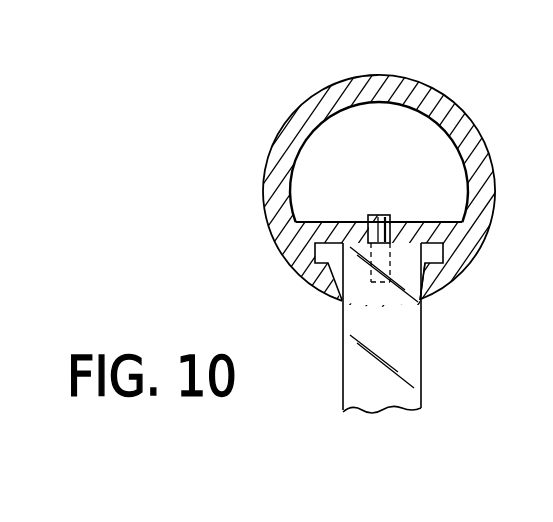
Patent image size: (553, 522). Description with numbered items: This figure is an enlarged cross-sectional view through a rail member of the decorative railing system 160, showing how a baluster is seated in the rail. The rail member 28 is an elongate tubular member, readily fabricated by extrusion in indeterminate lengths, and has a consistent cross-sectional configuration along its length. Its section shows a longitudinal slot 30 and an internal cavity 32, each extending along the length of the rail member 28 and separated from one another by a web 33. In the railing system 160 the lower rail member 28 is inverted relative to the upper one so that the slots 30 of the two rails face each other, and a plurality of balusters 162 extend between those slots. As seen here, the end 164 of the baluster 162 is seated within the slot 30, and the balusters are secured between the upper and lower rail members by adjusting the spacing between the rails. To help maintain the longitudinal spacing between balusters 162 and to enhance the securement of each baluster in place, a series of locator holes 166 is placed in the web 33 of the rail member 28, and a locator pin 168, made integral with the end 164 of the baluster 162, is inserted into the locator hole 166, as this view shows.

The railing system 160 is at (335, 176).
The rail member 28 is at (422, 82).
The internal cavity 32 is at (363, 132).
The web 33 is at (429, 222).
The end of baluster 164 is at (315, 256).
The longitudinal slot 30 is at (430, 245).
The locator hole 166 is at (369, 219).
The locator pin 168 is at (384, 215).
The baluster 162 is at (412, 363).